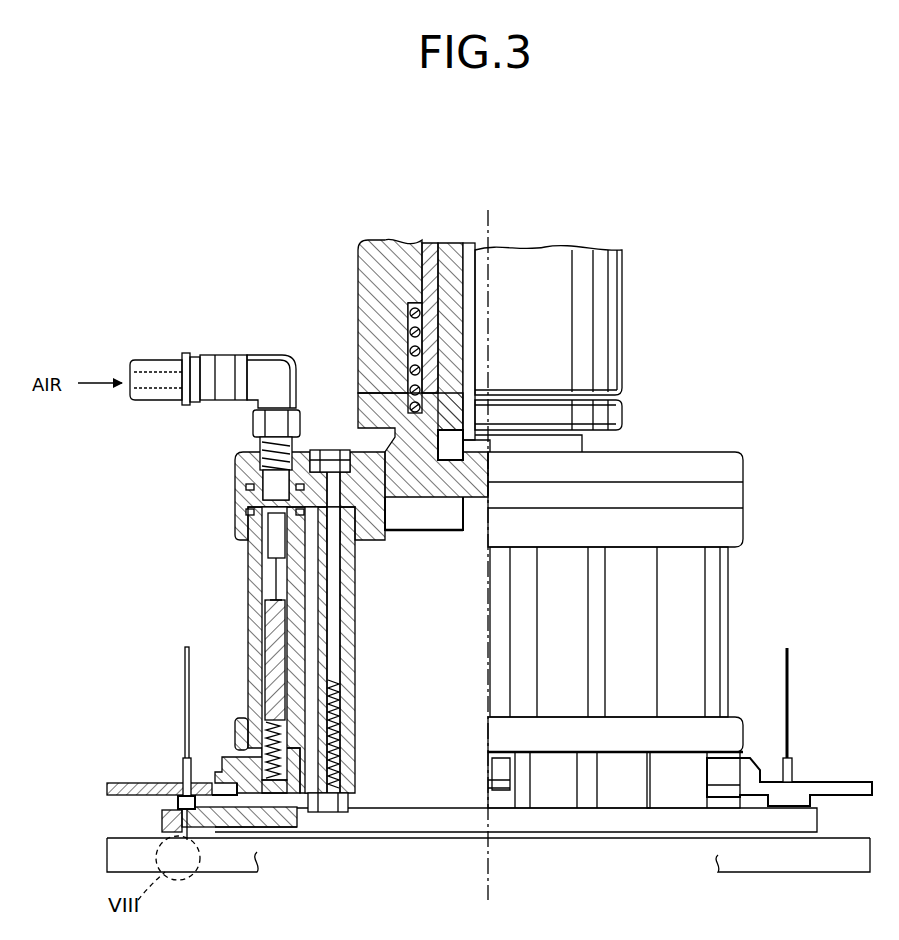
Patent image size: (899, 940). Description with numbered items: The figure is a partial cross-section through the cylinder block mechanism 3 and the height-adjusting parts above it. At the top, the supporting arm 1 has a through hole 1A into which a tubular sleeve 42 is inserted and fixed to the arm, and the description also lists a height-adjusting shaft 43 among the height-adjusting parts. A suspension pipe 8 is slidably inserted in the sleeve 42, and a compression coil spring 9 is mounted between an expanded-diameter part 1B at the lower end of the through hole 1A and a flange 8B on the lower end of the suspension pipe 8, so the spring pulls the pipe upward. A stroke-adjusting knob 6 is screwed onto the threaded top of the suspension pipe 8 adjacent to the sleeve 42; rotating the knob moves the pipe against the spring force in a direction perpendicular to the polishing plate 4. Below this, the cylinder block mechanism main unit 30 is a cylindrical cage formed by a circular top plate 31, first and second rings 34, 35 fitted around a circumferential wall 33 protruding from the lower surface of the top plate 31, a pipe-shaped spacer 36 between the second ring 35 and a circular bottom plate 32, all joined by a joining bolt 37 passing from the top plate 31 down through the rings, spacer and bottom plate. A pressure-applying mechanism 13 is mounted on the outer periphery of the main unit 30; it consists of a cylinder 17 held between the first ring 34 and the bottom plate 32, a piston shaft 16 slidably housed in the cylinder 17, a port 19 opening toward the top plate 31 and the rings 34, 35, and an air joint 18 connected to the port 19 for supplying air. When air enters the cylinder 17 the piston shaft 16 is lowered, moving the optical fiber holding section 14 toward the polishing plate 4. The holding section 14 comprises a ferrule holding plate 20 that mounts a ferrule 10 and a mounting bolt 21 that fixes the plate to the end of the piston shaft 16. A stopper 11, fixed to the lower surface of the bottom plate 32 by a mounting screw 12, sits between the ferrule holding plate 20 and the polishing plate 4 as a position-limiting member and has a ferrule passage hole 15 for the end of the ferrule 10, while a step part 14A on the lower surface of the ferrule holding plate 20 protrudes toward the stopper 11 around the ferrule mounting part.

The supporting arm 1 is at (372, 278).
The through hole 1A is at (413, 262).
The expanded-diameter part 1B is at (408, 356).
The cylinder block mechanism 3 is at (705, 462).
The polishing plate 4 is at (250, 880).
The stroke-adjusting knob 6 is at (612, 318).
The suspension pipe 8 is at (469, 245).
The flange 8B is at (612, 418).
The compression coil spring 9 is at (408, 313).
The ferrule 10 is at (218, 757).
The stopper 11 is at (232, 830).
The mounting screw 12 is at (328, 814).
The pressure-applying mechanism 13 is at (238, 500).
The optical fiber holding section 14 is at (175, 675).
The step part 14A is at (180, 790).
The ferrule passage hole 15 is at (165, 826).
The piston shaft 16 is at (270, 622).
The cylinder 17 is at (262, 568).
The air joint 18 is at (226, 358).
The port 19 is at (266, 482).
The ferrule holding plate 20 is at (116, 782).
The mounting bolt 21 is at (272, 795).
The cylinder block mechanism main unit 30 is at (597, 466).
The top plate 31 is at (740, 468).
The bottom plate 32 is at (740, 728).
The circumferential wall 33 is at (740, 495).
The first ring 34 is at (740, 530).
The second ring 35 is at (352, 553).
The spacer 36 is at (357, 640).
The joining bolt 37 is at (330, 450).
The sleeve 42 is at (432, 252).
The sleeve 43 is at (450, 250).